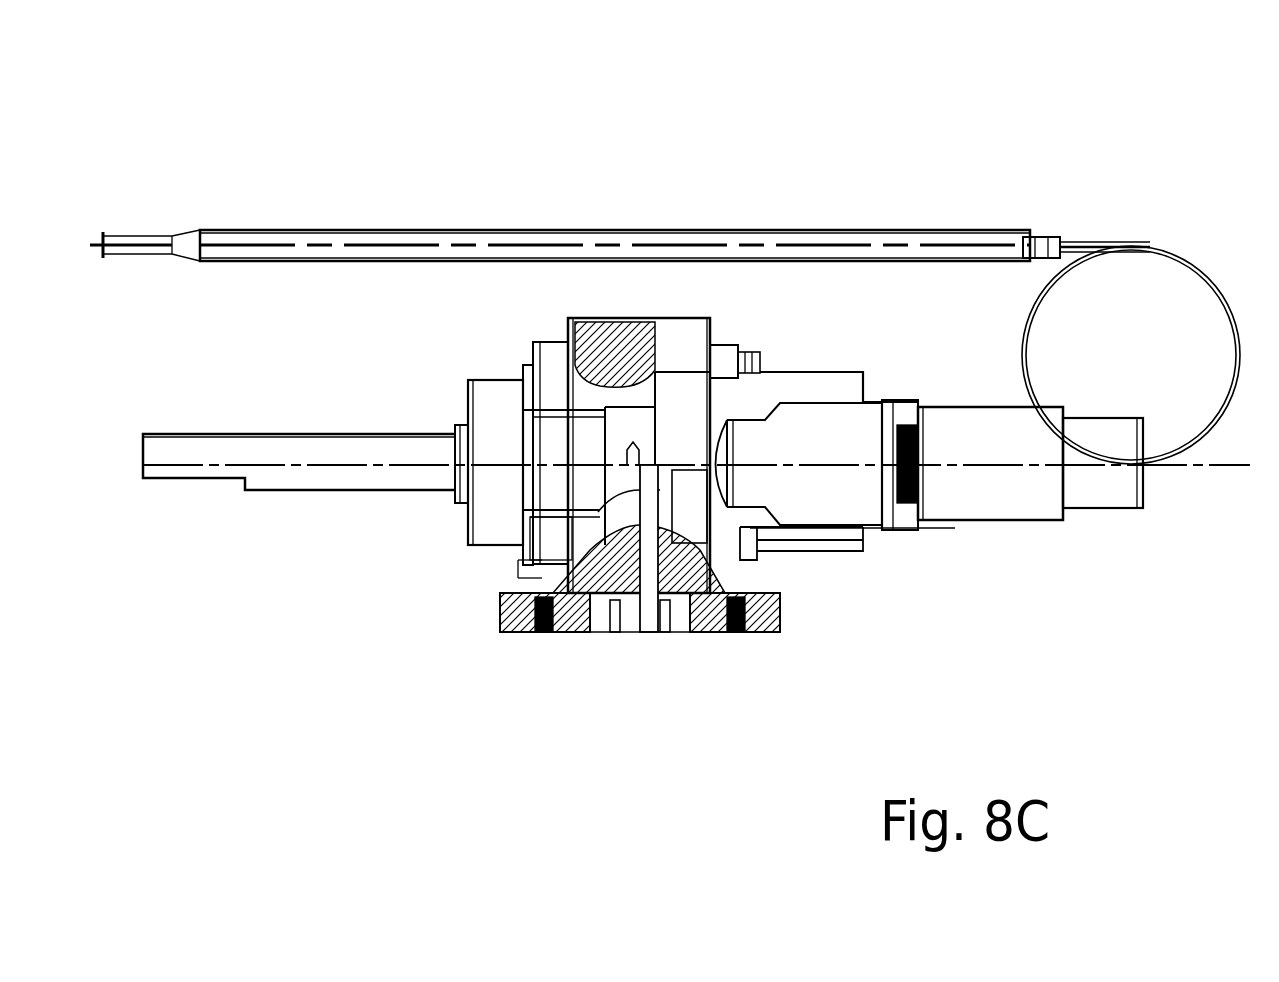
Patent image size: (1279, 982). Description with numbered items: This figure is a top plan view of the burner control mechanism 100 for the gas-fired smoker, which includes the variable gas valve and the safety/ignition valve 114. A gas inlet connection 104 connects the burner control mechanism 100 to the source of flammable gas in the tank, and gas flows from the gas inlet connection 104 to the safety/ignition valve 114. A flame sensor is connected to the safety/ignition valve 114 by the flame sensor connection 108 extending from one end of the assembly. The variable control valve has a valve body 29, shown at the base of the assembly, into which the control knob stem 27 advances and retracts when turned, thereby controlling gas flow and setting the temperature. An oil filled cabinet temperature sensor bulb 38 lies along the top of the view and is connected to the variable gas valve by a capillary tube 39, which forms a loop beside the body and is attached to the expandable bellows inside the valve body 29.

The burner control mechanism 100 is at (1043, 145).
The cabinet temperature sensor bulb 38 is at (720, 236).
The capillary tube 39 is at (1199, 262).
The control knob stem 27 is at (297, 475).
The valve body 29 is at (500, 603).
The gas inlet connection 104 is at (650, 620).
The safety/ignition valve 114 is at (818, 370).
The flame sensor connection 108 is at (1117, 495).